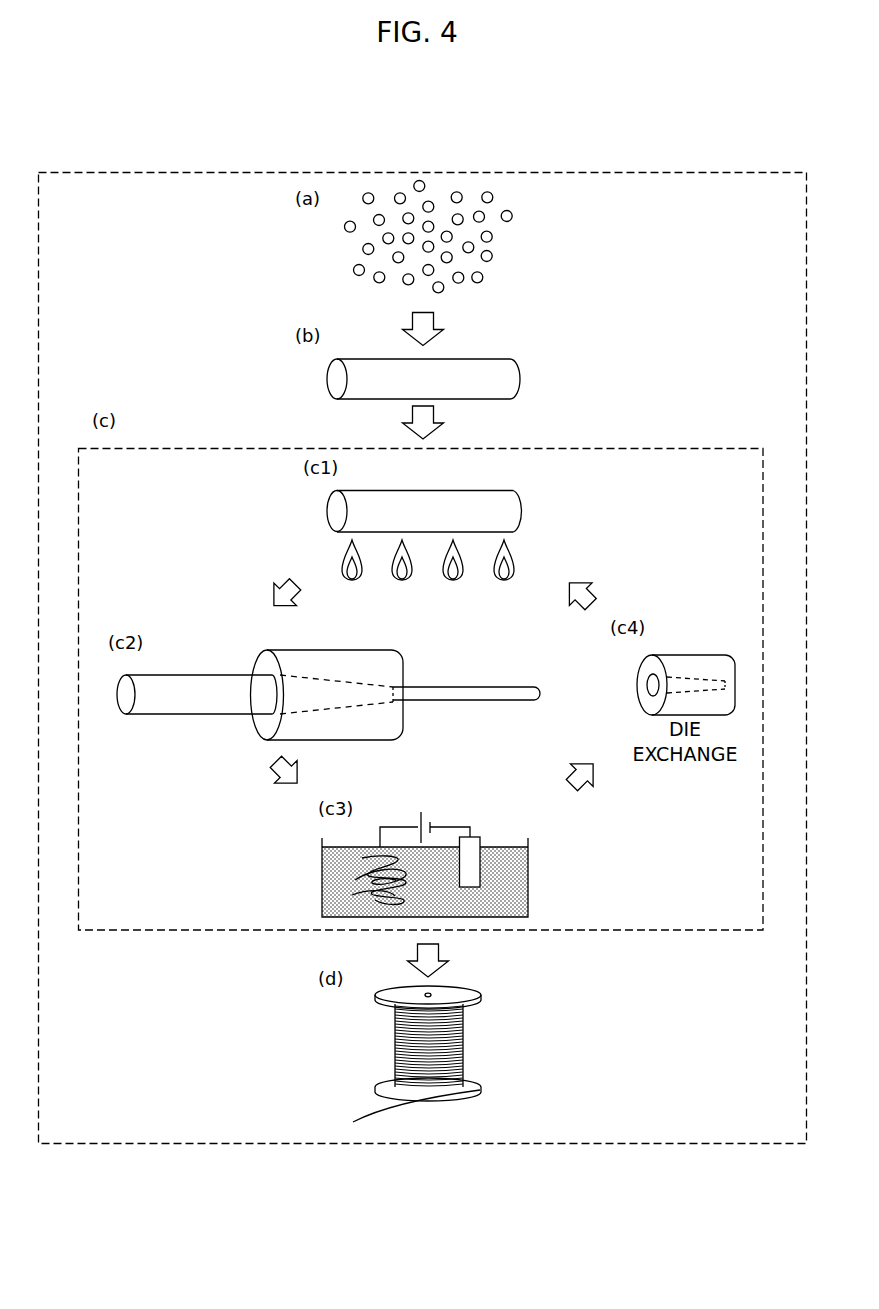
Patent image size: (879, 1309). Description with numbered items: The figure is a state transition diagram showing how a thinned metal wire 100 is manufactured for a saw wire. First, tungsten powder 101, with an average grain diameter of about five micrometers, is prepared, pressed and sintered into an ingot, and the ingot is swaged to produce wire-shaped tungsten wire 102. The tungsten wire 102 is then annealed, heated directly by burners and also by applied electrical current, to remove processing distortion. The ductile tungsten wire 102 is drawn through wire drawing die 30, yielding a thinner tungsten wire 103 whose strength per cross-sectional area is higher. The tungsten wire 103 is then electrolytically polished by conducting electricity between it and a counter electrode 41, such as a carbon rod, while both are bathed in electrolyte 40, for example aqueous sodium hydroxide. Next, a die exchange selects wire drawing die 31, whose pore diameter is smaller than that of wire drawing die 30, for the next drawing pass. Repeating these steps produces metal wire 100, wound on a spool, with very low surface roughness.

The tungsten powder 101 is at (492, 237).
The tungsten wire 102 is at (512, 380).
The wire drawing die 30 is at (360, 660).
The tungsten wire 103 is at (485, 690).
The wire drawing die 31 is at (702, 665).
The electrolyte 40 is at (507, 890).
The counter electrode 41 is at (467, 860).
The metal wire 100 is at (463, 1045).